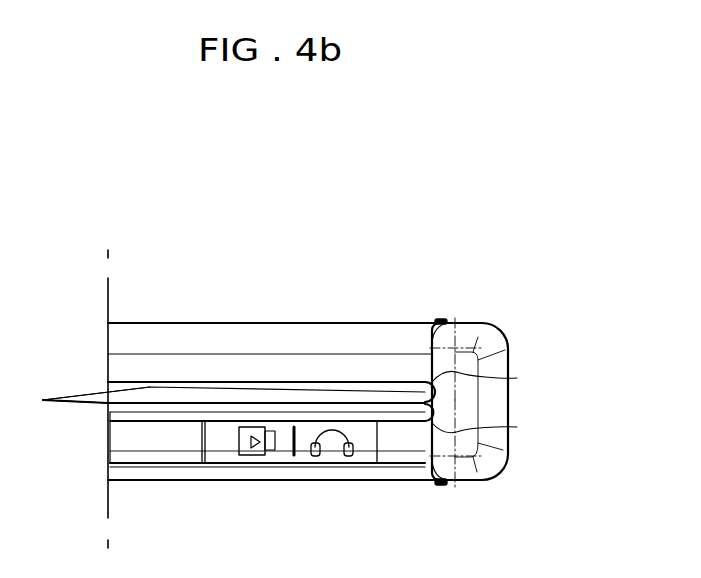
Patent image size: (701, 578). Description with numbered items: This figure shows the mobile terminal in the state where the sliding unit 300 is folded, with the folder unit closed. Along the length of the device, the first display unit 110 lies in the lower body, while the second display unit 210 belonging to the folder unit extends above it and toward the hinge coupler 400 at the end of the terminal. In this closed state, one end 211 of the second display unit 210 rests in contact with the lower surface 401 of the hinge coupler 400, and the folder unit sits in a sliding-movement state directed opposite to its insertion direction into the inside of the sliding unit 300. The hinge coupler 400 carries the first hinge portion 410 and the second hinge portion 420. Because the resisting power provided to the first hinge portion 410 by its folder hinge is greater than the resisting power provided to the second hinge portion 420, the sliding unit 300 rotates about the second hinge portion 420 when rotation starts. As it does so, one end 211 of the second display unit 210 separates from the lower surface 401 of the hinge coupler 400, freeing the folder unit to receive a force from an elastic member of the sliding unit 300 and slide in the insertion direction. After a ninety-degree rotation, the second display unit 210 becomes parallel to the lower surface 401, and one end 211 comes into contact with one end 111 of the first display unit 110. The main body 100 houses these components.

The main body 100 is at (299, 473).
The first display unit 110 is at (172, 413).
The one end of the first display unit 111 is at (517, 427).
The second display unit 210 is at (245, 395).
The one end of the second display unit 211 is at (517, 378).
The sliding unit 300 is at (345, 348).
The hinge coupler 400 is at (514, 399).
The lower surface of the hinge coupler 401 is at (430, 378).
The first hinge portion 410 is at (458, 458).
The second hinge portion 420 is at (459, 343).